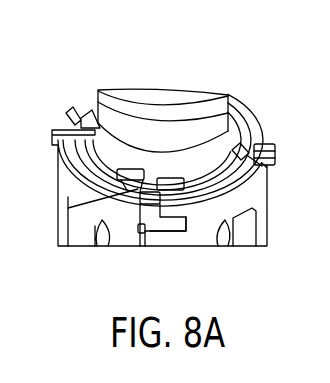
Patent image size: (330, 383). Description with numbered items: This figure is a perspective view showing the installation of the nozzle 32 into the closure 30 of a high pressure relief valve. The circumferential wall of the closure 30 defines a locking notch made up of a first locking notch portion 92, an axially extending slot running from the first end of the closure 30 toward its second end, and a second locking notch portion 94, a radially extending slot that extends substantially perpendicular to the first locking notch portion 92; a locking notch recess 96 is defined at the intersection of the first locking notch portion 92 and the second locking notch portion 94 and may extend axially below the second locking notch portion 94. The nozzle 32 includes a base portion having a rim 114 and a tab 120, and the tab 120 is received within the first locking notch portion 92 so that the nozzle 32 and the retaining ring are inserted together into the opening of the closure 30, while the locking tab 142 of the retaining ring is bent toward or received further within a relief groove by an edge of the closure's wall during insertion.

The closure 30 is at (68, 197).
The nozzle 32 is at (131, 92).
The first locking notch portion 92 is at (135, 220).
The second locking notch portion 94 is at (172, 244).
The locking notch recess 96 is at (140, 244).
The rim 114 is at (212, 178).
The tab 120 is at (268, 144).
The locking tab 142 is at (263, 166).